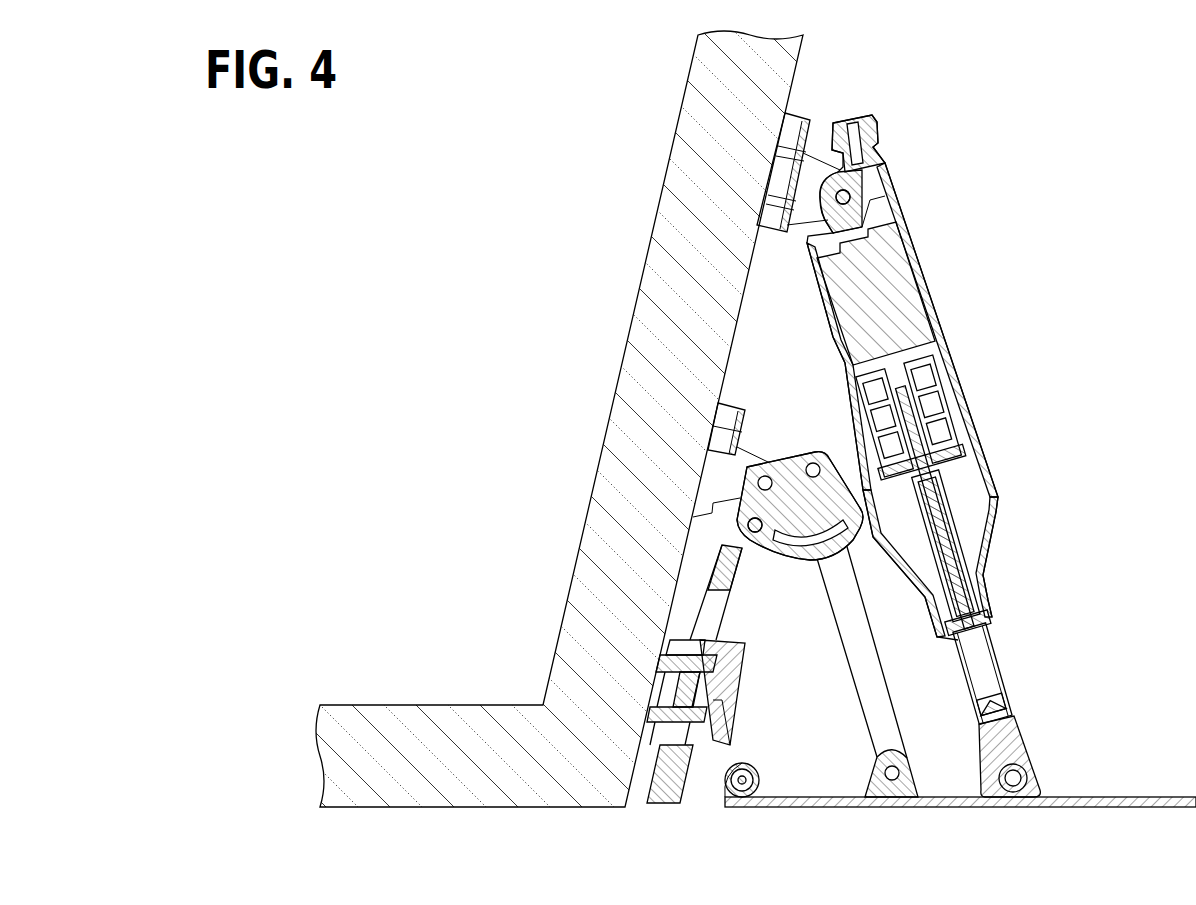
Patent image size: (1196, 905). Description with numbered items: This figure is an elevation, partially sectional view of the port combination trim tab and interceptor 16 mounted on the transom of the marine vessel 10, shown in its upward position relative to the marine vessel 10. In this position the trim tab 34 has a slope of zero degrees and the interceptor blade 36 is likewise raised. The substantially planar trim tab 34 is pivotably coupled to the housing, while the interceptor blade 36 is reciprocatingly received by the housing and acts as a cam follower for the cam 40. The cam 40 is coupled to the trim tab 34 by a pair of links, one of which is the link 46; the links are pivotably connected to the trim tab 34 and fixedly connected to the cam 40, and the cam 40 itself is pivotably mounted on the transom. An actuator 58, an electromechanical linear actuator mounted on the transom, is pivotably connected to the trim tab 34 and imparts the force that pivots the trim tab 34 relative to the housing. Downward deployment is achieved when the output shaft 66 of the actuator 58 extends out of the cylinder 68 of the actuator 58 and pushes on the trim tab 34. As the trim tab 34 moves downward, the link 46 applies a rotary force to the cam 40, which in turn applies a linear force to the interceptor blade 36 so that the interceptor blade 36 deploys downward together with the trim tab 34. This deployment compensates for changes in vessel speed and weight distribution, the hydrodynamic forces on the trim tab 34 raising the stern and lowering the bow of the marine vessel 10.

The marine vessel 10 is at (437, 678).
The port combination trim tab and interceptor 16 is at (1020, 152).
The trim tab 34 is at (1150, 795).
The interceptor blade 36 is at (670, 790).
The cam 40 is at (797, 460).
The link 46 is at (852, 688).
The actuator 58 is at (993, 475).
The output shaft 66 is at (1010, 667).
The cylinder 68 is at (923, 282).